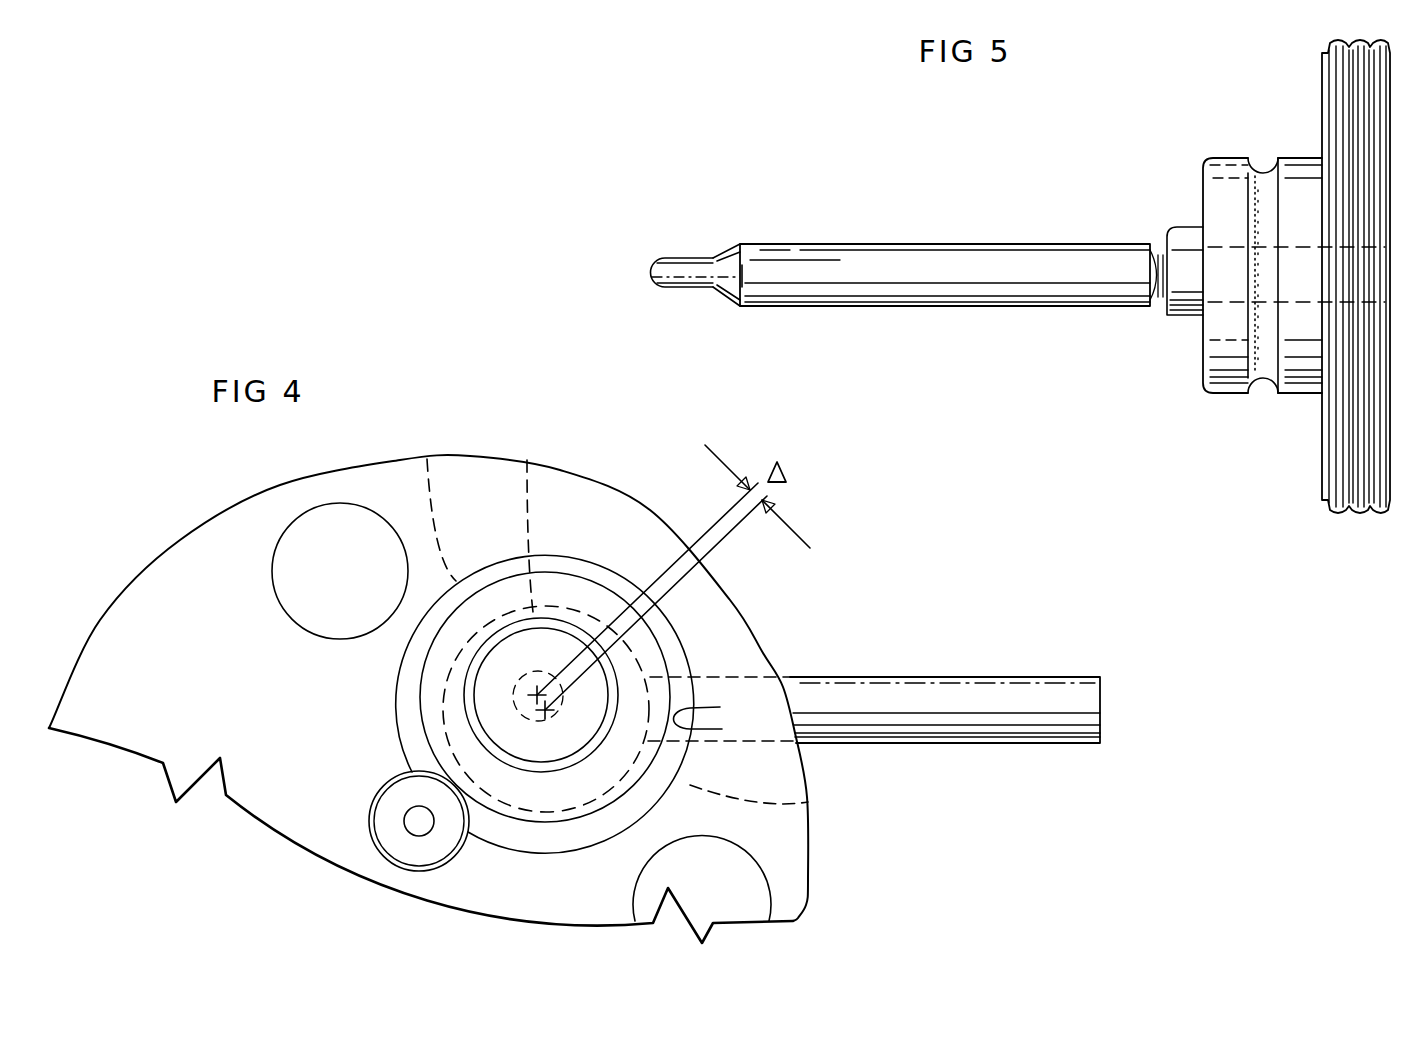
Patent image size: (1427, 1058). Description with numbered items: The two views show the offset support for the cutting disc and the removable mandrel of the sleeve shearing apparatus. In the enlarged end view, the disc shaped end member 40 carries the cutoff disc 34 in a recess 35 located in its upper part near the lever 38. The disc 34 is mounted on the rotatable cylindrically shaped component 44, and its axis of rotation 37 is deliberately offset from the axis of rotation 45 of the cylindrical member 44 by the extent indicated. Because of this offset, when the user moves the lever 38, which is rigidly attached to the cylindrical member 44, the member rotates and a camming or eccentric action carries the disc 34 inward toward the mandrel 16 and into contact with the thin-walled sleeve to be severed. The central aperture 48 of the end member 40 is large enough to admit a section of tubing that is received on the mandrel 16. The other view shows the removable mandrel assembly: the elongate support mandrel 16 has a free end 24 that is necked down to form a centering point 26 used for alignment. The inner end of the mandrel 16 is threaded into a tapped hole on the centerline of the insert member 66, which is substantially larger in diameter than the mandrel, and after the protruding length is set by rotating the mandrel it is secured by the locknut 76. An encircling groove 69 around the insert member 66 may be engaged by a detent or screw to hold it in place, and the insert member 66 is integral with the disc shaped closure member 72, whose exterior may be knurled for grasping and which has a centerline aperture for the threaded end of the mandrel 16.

In FIG. 5, the support mandrel 16 is at (950, 292).
In FIG. 5, the free end of the mandrel 24 is at (722, 252).
In FIG. 5, the centering point 26 is at (645, 274).
In FIG. 4, the centering point 26 is at (417, 821).
In FIG. 4, the cutoff disc 34 is at (643, 647).
In FIG. 4, the recess 35 is at (720, 707).
In FIG. 4, the axis of rotation of the cutoff disc 37 is at (537, 693).
In FIG. 4, the lever 38 is at (1055, 727).
In FIG. 4, the disc shaped end member 40 is at (803, 897).
In FIG. 4, the cylindrically shaped component 44 is at (530, 466).
In FIG. 4, the axis of rotation of the cylindrical member 45 is at (546, 708).
In FIG. 4, the central aperture 48 is at (410, 866).
In FIG. 5, the insert member 66 is at (1227, 393).
In FIG. 5, the encircling groove 69 is at (1267, 383).
In FIG. 5, the closure member 72 is at (1358, 512).
In FIG. 5, the locknut 76 is at (1183, 315).